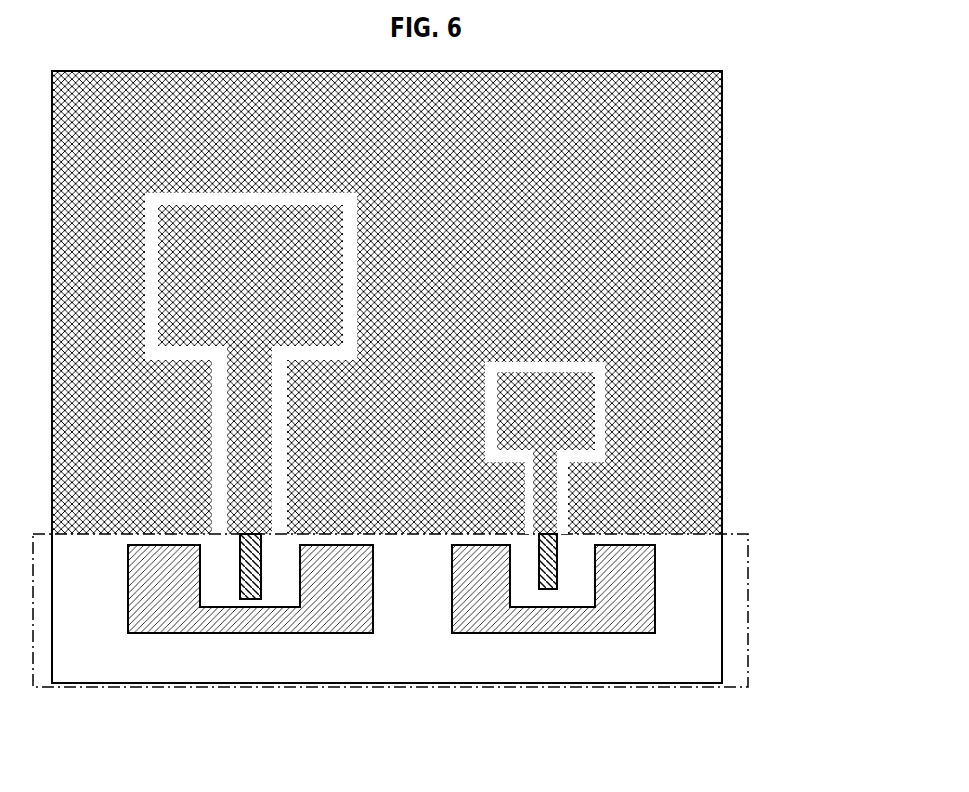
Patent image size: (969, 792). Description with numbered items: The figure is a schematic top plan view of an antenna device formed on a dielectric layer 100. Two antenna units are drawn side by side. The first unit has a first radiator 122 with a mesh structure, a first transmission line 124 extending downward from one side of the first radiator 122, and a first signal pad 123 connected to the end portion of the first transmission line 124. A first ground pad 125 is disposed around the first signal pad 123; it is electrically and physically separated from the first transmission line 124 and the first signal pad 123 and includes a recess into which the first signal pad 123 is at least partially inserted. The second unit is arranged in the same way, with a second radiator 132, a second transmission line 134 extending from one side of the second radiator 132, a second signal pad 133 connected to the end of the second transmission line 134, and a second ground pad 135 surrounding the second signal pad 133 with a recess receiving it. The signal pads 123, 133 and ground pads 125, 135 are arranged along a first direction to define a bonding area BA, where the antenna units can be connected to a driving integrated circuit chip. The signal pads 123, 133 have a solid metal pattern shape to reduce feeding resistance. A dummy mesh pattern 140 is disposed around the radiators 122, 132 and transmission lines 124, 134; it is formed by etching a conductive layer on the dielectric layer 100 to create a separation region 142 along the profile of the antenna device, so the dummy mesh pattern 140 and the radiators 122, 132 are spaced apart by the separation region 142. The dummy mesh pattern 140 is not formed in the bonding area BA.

The dielectric layer 100 is at (690, 638).
The bonding area BA is at (411, 610).
The dummy mesh pattern 140 is at (700, 405).
The separation region 142 is at (602, 450).
The first radiator 122 is at (220, 325).
The first signal pad 123 is at (262, 590).
The first transmission line 124 is at (263, 463).
The first ground pad 125 is at (173, 588).
The second radiator 132 is at (520, 435).
The second signal pad 133 is at (557, 590).
The second transmission line 134 is at (547, 498).
The second ground pad 135 is at (467, 613).